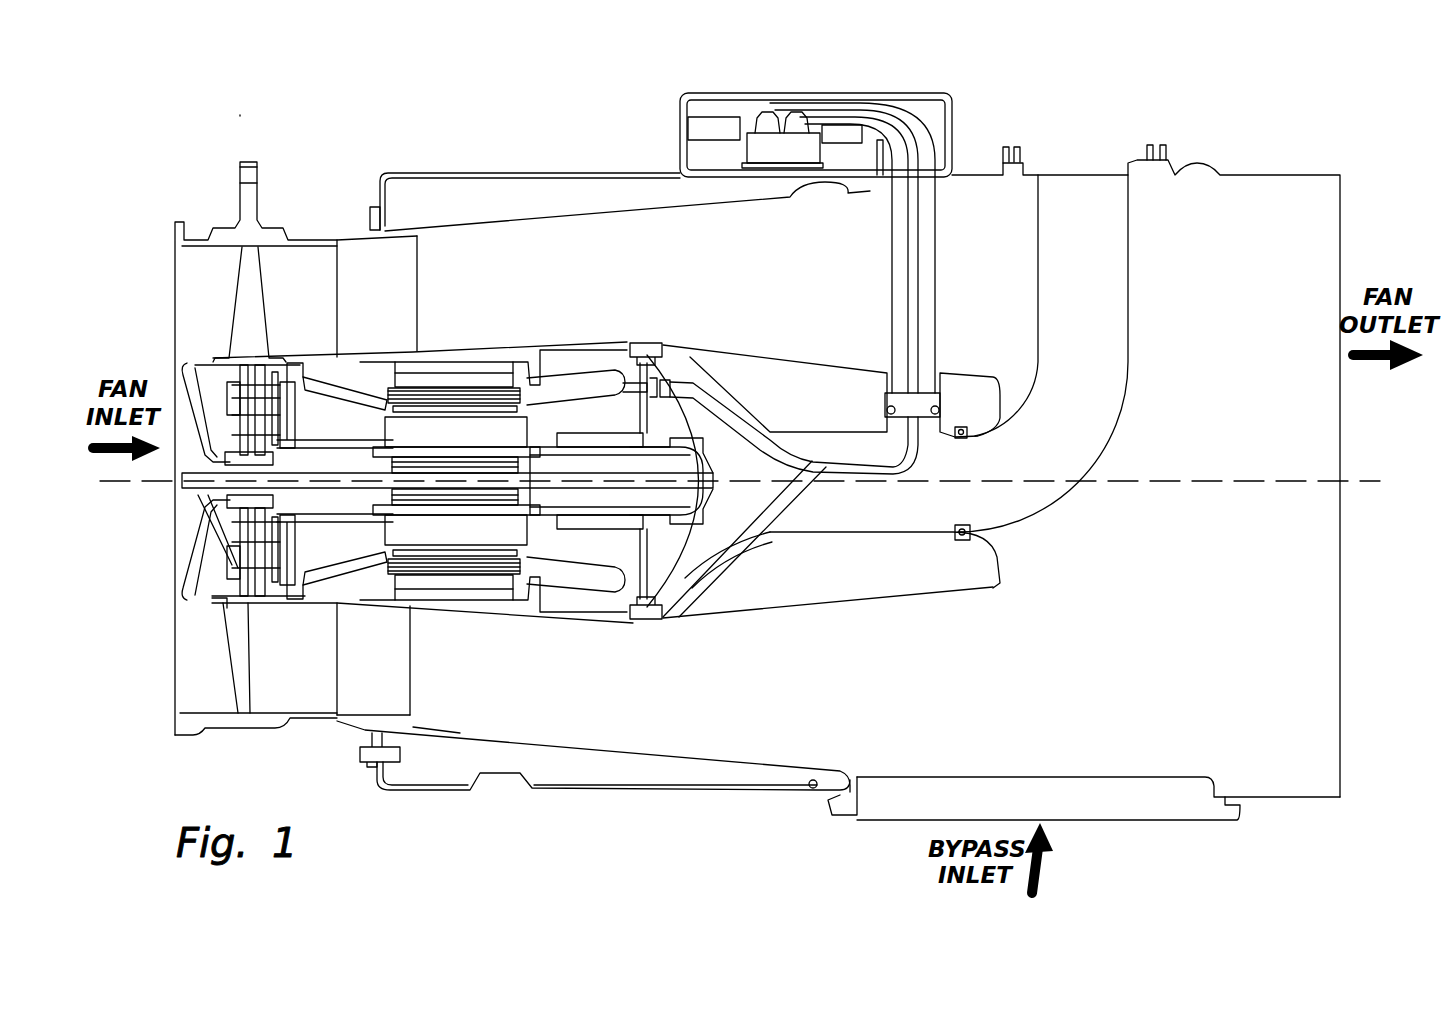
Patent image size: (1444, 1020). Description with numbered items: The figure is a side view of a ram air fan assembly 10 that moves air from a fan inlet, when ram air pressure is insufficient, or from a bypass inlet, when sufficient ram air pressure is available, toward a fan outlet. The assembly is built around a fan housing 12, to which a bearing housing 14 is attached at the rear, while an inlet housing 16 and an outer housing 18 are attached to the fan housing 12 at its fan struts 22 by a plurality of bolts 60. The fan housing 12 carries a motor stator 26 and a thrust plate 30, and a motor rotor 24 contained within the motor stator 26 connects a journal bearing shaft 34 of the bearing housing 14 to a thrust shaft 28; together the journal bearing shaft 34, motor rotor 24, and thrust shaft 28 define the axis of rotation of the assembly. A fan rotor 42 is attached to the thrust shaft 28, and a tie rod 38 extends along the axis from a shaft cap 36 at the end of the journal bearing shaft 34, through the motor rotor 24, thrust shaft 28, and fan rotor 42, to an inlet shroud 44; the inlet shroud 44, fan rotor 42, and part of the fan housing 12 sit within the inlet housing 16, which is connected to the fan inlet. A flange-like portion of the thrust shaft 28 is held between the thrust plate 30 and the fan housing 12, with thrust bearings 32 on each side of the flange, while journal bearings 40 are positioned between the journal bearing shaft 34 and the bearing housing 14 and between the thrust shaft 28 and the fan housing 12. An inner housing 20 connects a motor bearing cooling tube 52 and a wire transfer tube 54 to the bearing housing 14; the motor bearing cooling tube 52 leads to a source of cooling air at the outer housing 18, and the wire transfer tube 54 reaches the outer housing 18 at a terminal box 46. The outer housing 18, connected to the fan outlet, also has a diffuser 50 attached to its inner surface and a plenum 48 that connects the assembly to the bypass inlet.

The ram air fan assembly 10 is at (240, 115).
The fan housing 12 is at (333, 357).
The bearing housing 14 is at (640, 585).
The inlet housing 16 is at (232, 730).
The outer housing 18 is at (447, 790).
The inner housing 20 is at (868, 603).
The fan struts 22 is at (370, 265).
The motor rotor 24 is at (458, 525).
The motor stator 26 is at (395, 573).
The thrust shaft 28 is at (325, 505).
The thrust plate 30 is at (247, 542).
The thrust bearings 32 is at (240, 417).
The journal bearing shaft 34 is at (680, 437).
The shaft cap 36 is at (735, 548).
The tie rod 38 is at (777, 502).
The journal bearings 40 is at (327, 437).
The fan rotor 42 is at (243, 637).
The inlet shroud 44 is at (190, 525).
The terminal box 46 is at (865, 95).
The plenum 48 is at (1153, 755).
The diffuser 50 is at (645, 753).
The motor bearing cooling tube 52 is at (1130, 245).
The wire transfer tube 54 is at (937, 248).
The bolts 60 is at (357, 753).